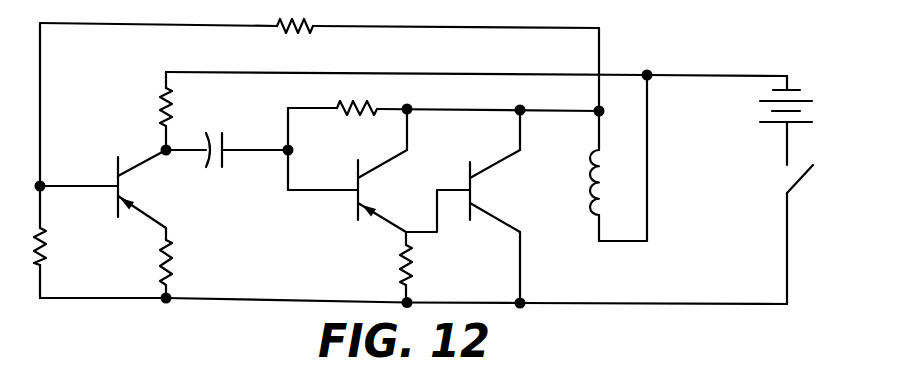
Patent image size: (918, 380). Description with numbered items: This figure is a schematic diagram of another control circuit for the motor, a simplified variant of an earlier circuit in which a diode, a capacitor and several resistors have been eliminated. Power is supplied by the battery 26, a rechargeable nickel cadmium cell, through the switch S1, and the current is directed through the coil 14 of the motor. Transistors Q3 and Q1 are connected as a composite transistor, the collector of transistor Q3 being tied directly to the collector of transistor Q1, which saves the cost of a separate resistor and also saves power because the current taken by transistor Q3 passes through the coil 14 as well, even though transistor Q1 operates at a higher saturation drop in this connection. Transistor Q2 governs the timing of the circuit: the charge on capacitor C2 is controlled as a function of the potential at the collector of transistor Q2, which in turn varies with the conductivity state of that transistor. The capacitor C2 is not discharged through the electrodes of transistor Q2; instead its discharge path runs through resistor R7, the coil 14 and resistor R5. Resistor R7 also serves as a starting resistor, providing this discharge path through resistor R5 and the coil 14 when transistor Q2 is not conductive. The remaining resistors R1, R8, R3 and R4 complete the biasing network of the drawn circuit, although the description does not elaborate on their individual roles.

The resistor R1 is at (313, 25).
The resistor R5 is at (172, 97).
The resistor R7 is at (341, 118).
The resistor R8 is at (44, 262).
The resistor R3 is at (172, 265).
The resistor R4 is at (412, 268).
The capacitor C2 is at (215, 169).
The transistor Q2 is at (128, 190).
The transistor Q3 is at (368, 187).
The transistor Q1 is at (480, 193).
The coil 14 is at (590, 212).
The battery 26 is at (808, 113).
The switch S1 is at (803, 183).